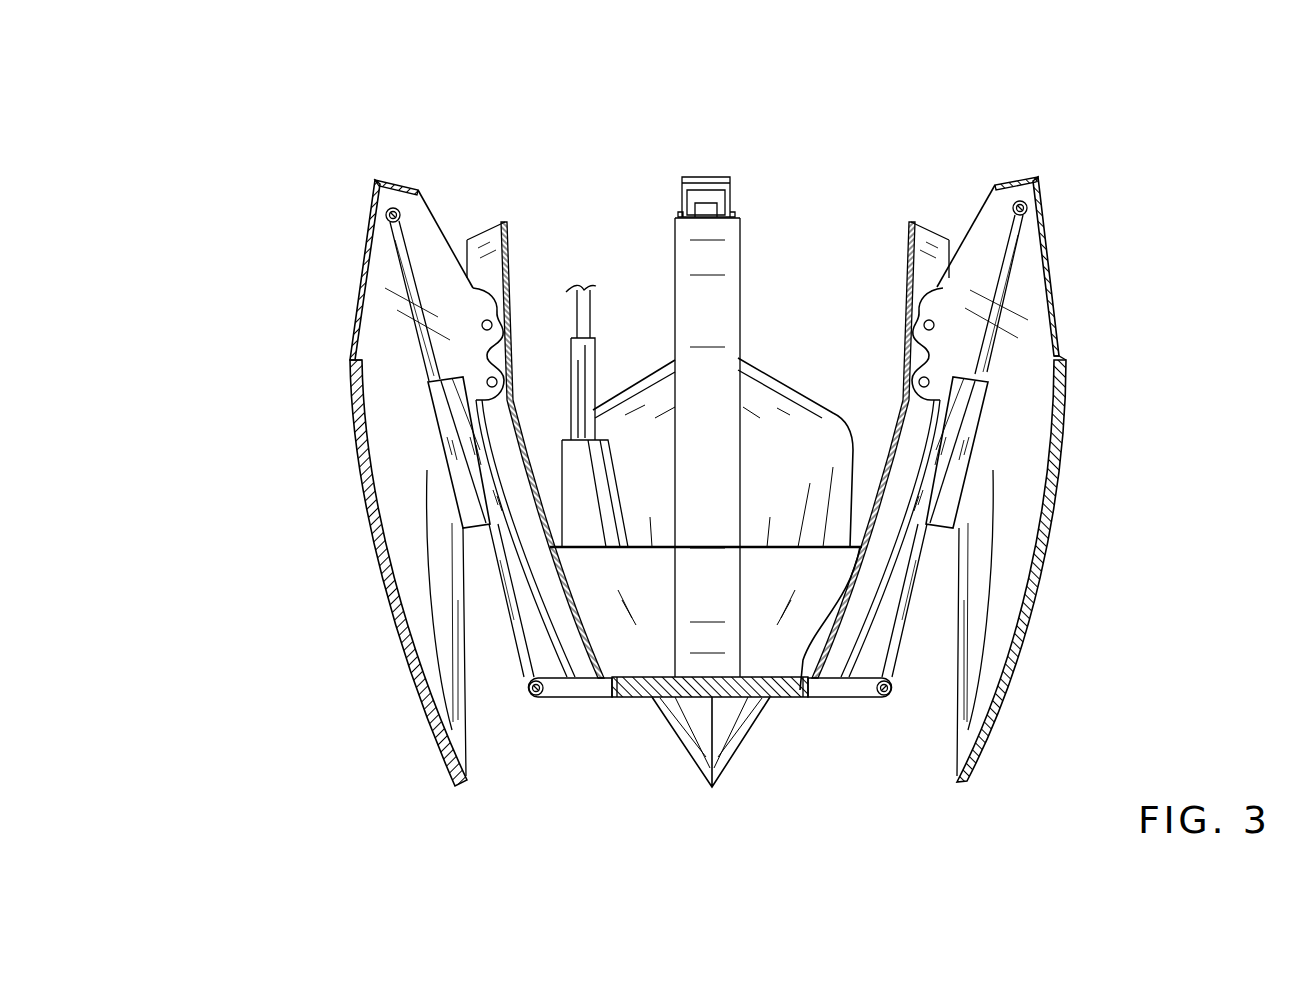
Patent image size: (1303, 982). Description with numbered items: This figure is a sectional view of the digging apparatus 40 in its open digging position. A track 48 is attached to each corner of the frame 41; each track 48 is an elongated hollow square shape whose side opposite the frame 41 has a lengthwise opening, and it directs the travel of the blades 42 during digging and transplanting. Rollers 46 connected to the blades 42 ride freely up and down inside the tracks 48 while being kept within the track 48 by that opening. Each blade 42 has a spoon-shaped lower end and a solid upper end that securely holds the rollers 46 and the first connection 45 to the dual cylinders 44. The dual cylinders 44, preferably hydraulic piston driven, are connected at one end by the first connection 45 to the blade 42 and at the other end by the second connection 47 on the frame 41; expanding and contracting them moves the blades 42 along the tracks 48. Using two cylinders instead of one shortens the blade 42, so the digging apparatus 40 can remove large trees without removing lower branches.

The digging apparatus 40 is at (1043, 576).
The frame 41 is at (803, 690).
The blade 42 is at (407, 668).
The dual cylinders 44 is at (432, 396).
The first connection 45 is at (385, 208).
The rollers 46 is at (487, 300).
The second connection 47 is at (527, 695).
The track 48 is at (481, 242).